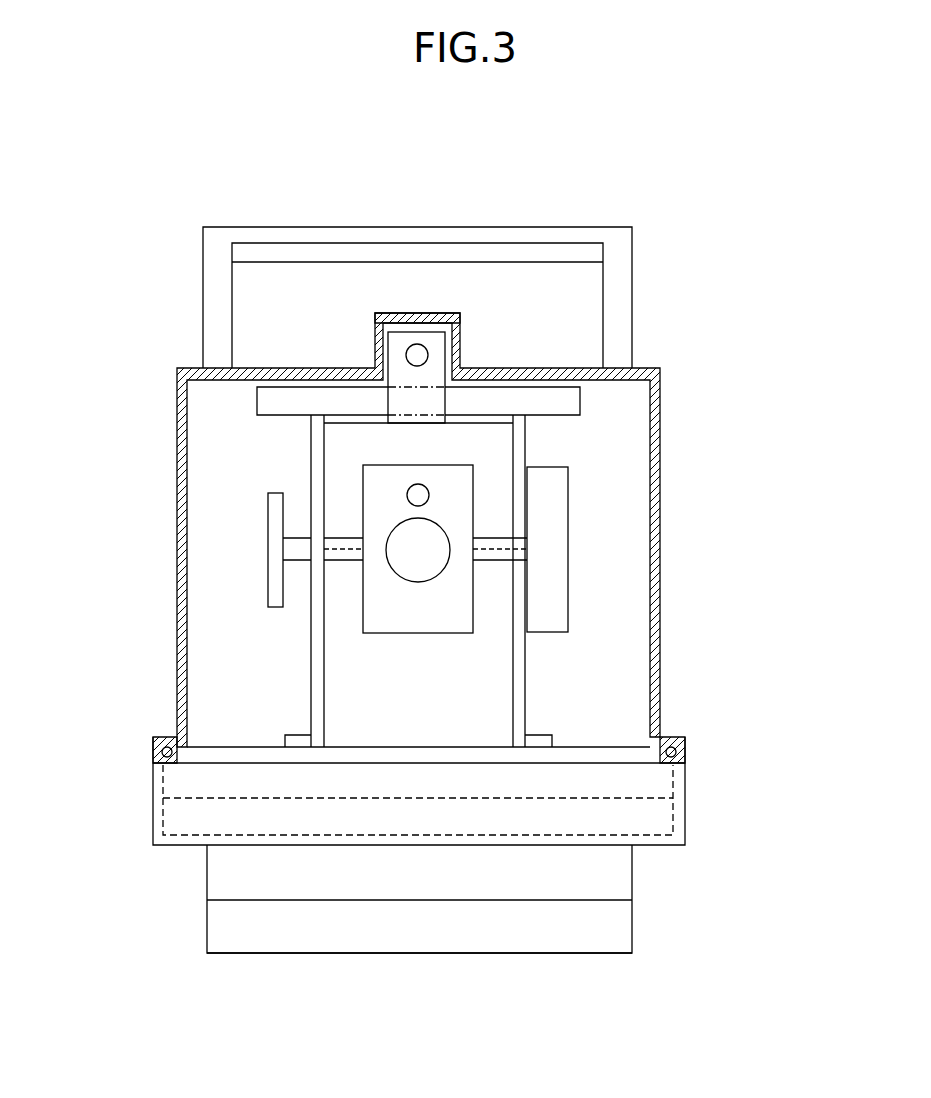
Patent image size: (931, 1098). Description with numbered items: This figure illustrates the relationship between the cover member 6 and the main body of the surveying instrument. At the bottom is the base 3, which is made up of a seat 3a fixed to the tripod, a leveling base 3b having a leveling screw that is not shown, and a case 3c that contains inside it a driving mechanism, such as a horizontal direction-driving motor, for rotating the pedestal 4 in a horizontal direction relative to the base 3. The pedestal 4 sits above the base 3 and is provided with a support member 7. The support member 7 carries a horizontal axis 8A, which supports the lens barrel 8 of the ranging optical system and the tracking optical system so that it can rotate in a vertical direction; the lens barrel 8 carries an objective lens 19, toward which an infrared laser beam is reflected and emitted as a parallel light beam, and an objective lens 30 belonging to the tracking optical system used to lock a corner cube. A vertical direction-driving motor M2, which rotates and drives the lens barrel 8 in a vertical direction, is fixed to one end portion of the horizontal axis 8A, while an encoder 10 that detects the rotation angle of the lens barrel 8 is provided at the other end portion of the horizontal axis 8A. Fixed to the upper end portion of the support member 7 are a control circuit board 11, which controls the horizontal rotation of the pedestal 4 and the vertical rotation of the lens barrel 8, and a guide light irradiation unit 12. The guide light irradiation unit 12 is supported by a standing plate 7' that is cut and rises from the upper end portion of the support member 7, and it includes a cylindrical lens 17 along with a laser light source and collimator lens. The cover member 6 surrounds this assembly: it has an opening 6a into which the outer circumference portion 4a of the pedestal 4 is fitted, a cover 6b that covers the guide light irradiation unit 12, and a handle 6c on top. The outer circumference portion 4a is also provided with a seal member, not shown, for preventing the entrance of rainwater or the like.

The base 3 is at (780, 803).
The seat 3a is at (613, 932).
The leveling base 3b is at (610, 880).
The case 3c is at (682, 803).
The pedestal 4 is at (573, 757).
The outer circumference portion 4a is at (172, 745).
The cover member 6 is at (662, 490).
The opening 6a is at (667, 737).
The cover 6b is at (397, 317).
The handle 6c is at (558, 237).
The support member 7 is at (423, 581).
The standing plate 7' is at (280, 358).
The lens barrel 8 is at (383, 595).
The horizontal axis 8A is at (347, 548).
The encoder 10 is at (275, 525).
The control circuit board 11 is at (527, 387).
The guide light irradiation unit 12 is at (433, 318).
The cylindrical lens 17 is at (406, 356).
The objective lens 19 is at (425, 562).
The objective lens 30 is at (422, 492).
The vertical direction-driving motor M2 is at (568, 550).